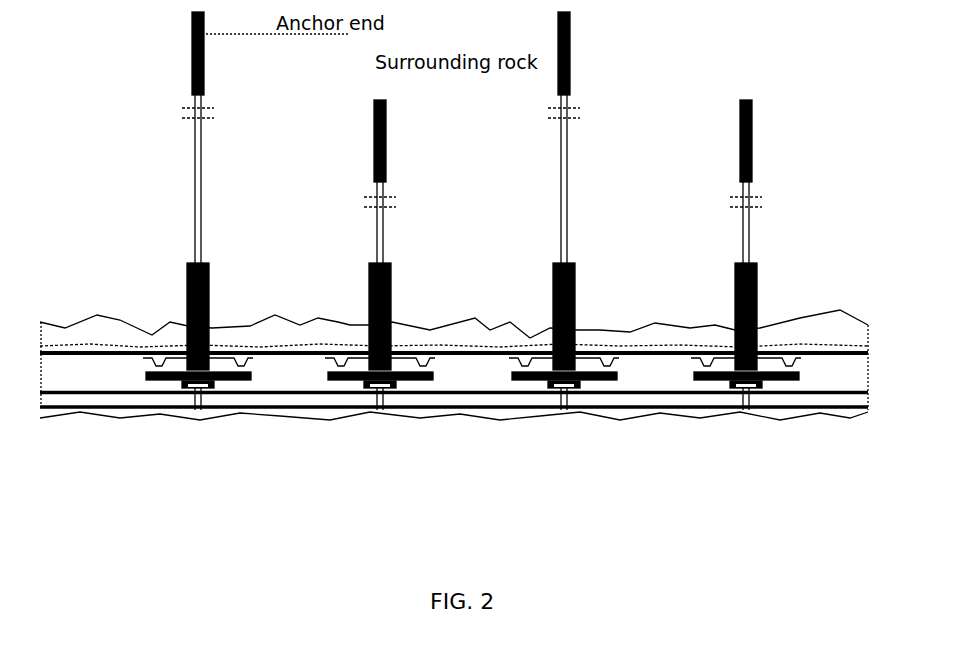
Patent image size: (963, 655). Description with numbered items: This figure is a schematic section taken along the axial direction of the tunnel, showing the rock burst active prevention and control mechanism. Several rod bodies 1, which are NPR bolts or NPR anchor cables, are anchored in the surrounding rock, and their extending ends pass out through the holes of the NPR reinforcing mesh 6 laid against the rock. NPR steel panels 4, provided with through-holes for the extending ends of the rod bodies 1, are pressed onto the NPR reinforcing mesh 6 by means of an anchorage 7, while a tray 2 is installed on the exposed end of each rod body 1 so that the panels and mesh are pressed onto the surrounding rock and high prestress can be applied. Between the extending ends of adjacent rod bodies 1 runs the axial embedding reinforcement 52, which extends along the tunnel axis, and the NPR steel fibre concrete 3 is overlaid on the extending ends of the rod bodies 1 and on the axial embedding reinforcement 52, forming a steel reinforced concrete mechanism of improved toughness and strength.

The rod bodies 1 is at (378, 392).
The tray 2 is at (164, 380).
The NPR steel fibre concrete 3 is at (838, 412).
The NPR steel panels 4 is at (771, 360).
The axial embedding reinforcement 52 is at (454, 466).
The NPR reinforcing mesh 6 is at (296, 350).
The anchorage 7 is at (735, 395).